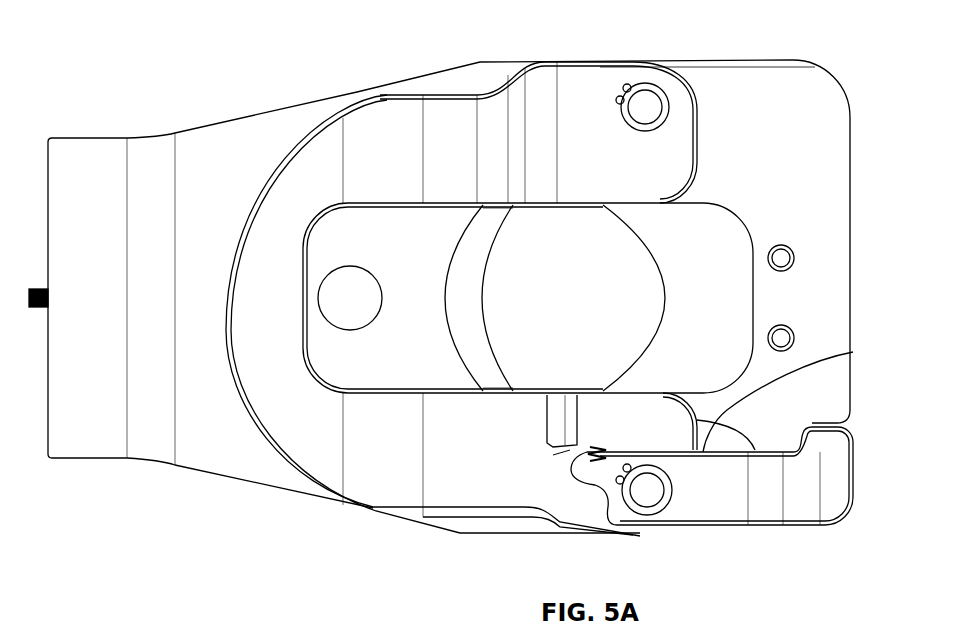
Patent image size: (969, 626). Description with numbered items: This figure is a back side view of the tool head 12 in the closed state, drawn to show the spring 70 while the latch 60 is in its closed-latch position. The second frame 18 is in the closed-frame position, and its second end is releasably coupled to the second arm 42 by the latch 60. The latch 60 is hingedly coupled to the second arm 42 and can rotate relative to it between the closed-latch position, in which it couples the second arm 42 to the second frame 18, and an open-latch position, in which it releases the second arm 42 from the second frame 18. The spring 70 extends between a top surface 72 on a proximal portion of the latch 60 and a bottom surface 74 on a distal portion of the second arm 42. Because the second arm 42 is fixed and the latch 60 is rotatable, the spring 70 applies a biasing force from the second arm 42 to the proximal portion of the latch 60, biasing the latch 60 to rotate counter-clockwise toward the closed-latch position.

The tool head 12 is at (797, 42).
The second frame 18 is at (835, 272).
The second arm 42 is at (392, 487).
The latch 60 is at (766, 513).
The spring 70 is at (853, 352).
The top surface 72 is at (585, 458).
The bottom surface 74 is at (553, 455).